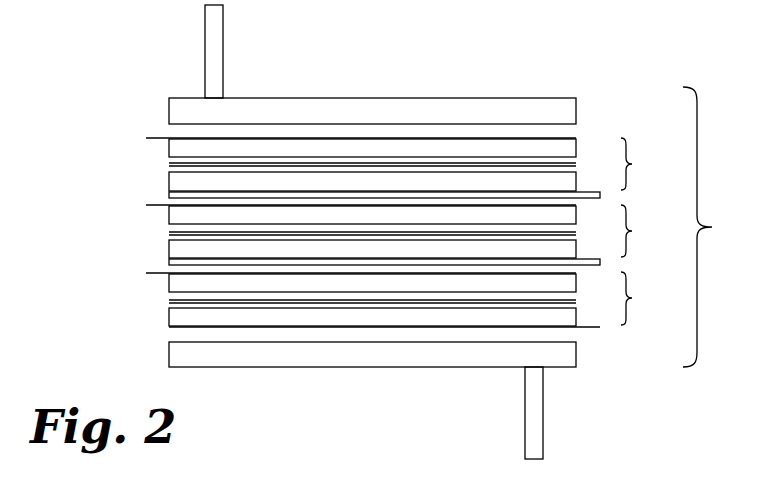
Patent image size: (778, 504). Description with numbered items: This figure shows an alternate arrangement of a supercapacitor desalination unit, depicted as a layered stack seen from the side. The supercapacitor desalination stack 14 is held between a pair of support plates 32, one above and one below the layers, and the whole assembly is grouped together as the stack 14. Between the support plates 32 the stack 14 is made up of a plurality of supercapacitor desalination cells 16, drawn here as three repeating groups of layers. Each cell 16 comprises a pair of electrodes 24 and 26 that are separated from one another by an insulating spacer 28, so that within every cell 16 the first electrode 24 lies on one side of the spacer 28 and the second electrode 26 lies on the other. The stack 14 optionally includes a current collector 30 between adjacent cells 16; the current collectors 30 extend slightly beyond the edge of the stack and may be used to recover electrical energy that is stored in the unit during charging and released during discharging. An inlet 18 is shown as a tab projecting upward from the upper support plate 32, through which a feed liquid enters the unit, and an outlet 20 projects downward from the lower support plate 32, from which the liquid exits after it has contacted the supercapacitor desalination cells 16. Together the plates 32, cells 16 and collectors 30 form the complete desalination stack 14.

The supercapacitor desalination stack 14 is at (417, 227).
The supercapacitor desalination cell 16 is at (374, 241).
The inlet 18 is at (223, 50).
The outlet 20 is at (543, 410).
The electrode 24 is at (169, 150).
The electrode 26 is at (169, 188).
The insulating spacer 28 is at (169, 165).
The current collector 30 is at (600, 196).
The support plate 32 is at (449, 98).